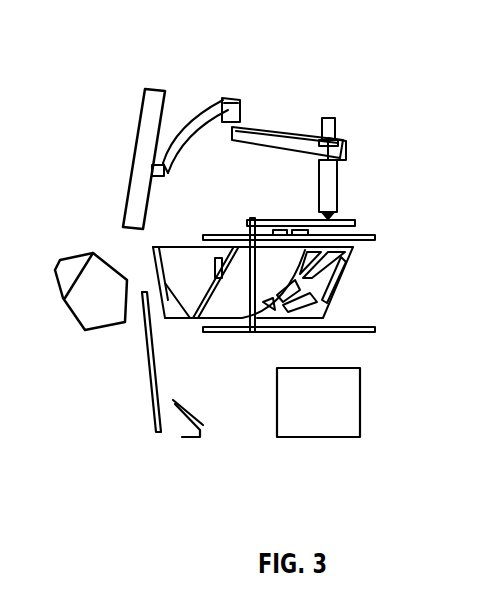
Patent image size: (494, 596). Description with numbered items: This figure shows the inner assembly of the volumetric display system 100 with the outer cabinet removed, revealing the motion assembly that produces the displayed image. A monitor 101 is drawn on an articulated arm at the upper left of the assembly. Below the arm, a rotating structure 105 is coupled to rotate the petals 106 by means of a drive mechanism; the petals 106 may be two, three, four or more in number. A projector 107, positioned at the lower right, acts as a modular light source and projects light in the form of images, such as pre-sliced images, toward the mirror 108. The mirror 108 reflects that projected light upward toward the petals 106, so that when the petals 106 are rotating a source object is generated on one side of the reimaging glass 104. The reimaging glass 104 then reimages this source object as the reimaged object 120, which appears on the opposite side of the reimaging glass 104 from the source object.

The volumetric display system 100 is at (233, 63).
The monitor 101 is at (137, 115).
The reimaging glass 104 is at (143, 390).
The rotating structure 105 is at (367, 227).
The petals 106 is at (345, 278).
The projector 107 is at (315, 445).
The mirror 108 is at (190, 437).
The reimaged object 120 is at (66, 252).